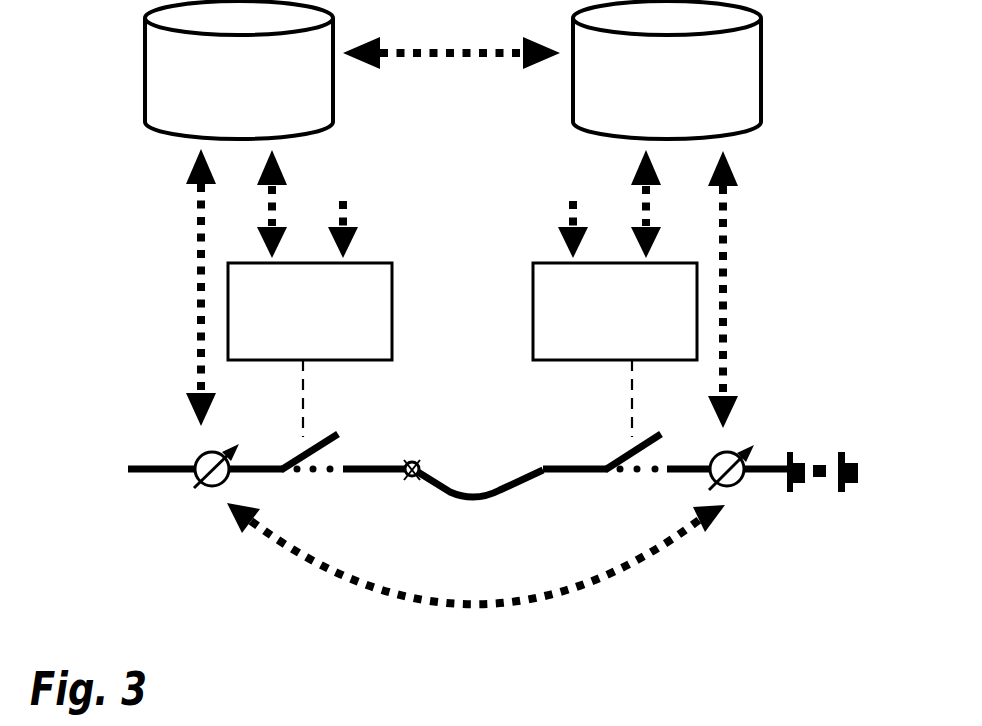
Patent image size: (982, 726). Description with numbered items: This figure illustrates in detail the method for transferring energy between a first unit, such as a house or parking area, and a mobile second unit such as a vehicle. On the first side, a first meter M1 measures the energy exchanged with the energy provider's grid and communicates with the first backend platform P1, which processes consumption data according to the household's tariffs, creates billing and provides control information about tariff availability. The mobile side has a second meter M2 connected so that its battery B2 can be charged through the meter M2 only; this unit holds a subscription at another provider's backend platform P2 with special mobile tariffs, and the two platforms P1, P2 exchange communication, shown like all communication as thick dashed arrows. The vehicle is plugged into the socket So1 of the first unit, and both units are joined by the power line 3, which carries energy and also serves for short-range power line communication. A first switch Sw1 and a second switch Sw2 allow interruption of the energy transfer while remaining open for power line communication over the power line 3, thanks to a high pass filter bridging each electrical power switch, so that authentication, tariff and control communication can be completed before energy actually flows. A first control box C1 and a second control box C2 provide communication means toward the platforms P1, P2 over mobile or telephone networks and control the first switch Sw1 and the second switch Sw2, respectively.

The first backend platform P1 is at (260, 95).
The second backend platform P2 is at (695, 95).
The first control box C1 is at (330, 323).
The second control box C2 is at (647, 323).
The first switch Sw1 is at (323, 437).
The second switch Sw2 is at (625, 437).
The socket So1 is at (421, 470).
The power line 3 is at (468, 498).
The first meter M1 is at (209, 486).
The second meter M2 is at (733, 486).
The battery B2 is at (822, 498).